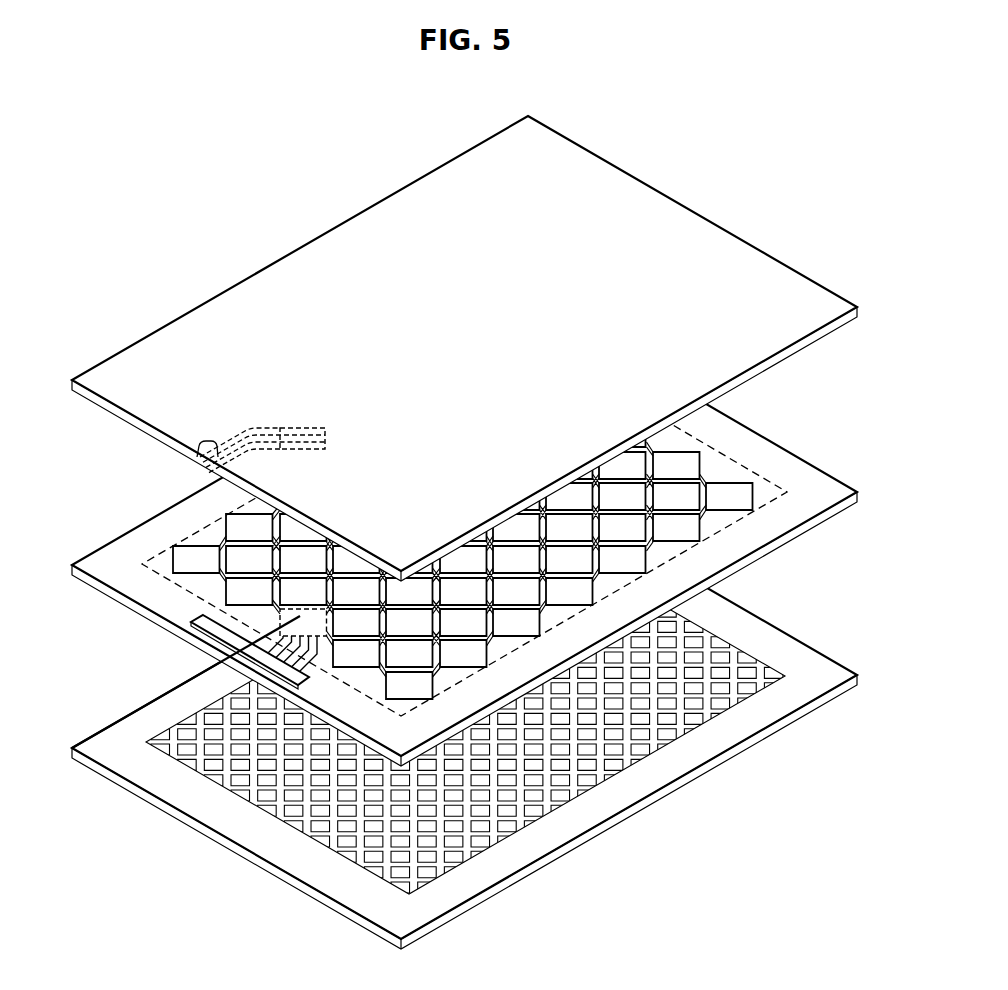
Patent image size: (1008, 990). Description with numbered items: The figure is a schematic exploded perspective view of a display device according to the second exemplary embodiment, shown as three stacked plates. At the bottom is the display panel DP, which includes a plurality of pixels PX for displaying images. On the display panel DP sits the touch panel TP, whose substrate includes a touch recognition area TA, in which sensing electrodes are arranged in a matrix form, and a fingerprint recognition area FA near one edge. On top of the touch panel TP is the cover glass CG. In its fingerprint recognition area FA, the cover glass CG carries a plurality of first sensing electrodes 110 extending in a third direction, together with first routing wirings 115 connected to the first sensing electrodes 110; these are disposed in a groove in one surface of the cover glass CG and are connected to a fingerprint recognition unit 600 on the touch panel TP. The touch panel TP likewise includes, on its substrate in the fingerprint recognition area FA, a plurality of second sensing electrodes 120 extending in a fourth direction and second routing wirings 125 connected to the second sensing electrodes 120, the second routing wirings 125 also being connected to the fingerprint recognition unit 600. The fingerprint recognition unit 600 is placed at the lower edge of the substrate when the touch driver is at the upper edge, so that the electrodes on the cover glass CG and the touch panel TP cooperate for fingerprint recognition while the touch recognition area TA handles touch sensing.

The cover glass CG is at (820, 257).
The touch panel TP is at (820, 454).
The display panel DP is at (820, 640).
The pixels PX is at (757, 686).
The touch recognition area TA is at (162, 547).
The fingerprint recognition area FA is at (280, 428).
The first sensing electrodes 110 is at (313, 428).
The first routing wirings 115 is at (197, 463).
The second sensing electrodes 120 is at (280, 632).
The second routing wirings 125 is at (266, 655).
The fingerprint recognition unit 600 is at (201, 616).